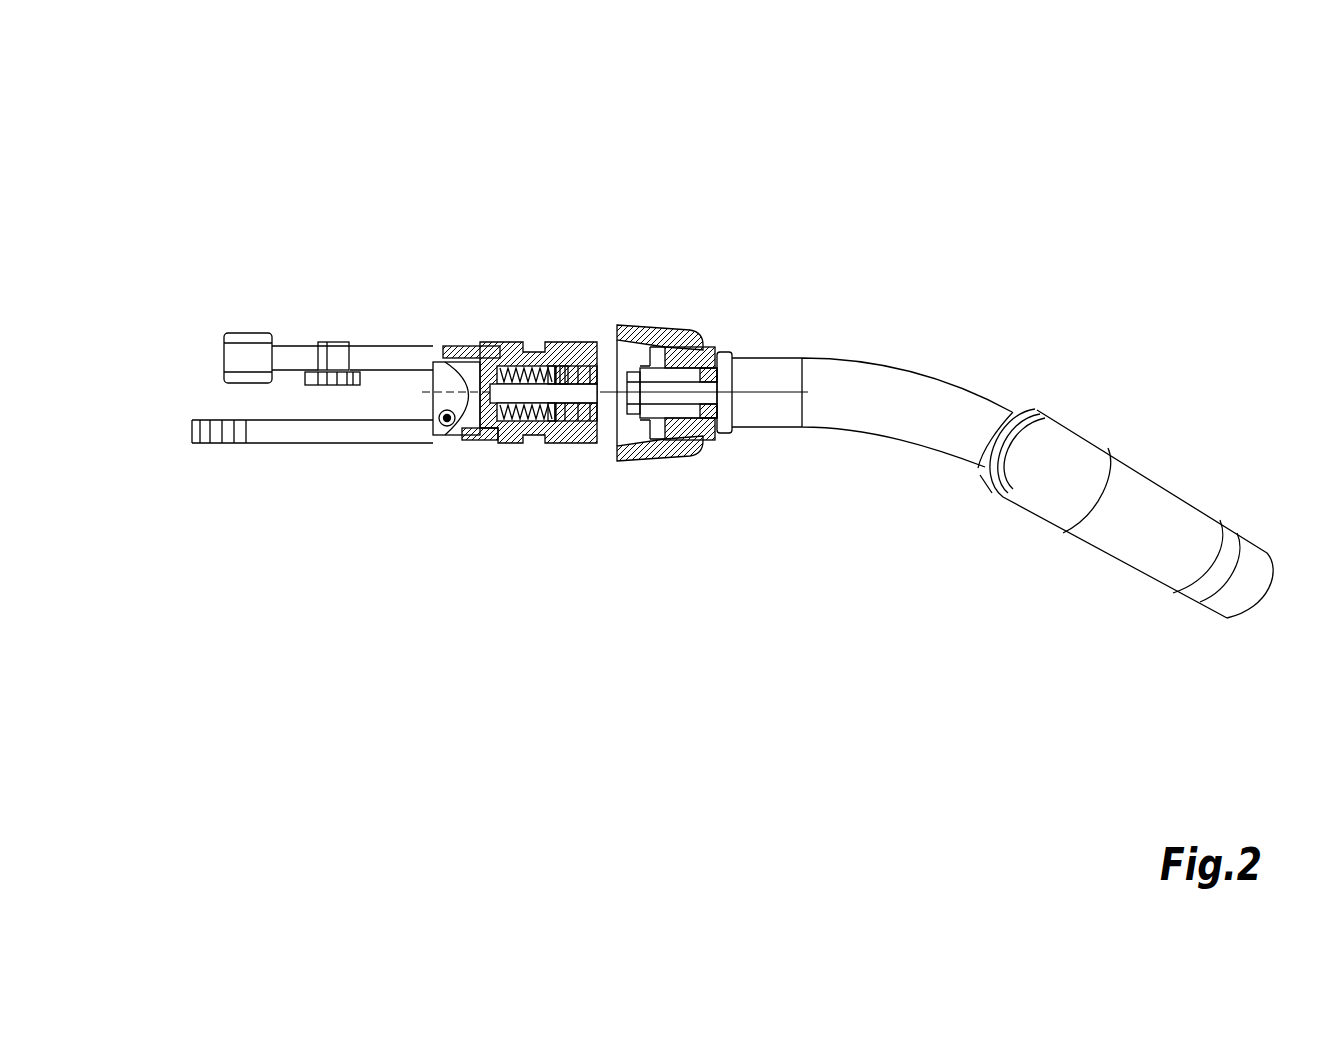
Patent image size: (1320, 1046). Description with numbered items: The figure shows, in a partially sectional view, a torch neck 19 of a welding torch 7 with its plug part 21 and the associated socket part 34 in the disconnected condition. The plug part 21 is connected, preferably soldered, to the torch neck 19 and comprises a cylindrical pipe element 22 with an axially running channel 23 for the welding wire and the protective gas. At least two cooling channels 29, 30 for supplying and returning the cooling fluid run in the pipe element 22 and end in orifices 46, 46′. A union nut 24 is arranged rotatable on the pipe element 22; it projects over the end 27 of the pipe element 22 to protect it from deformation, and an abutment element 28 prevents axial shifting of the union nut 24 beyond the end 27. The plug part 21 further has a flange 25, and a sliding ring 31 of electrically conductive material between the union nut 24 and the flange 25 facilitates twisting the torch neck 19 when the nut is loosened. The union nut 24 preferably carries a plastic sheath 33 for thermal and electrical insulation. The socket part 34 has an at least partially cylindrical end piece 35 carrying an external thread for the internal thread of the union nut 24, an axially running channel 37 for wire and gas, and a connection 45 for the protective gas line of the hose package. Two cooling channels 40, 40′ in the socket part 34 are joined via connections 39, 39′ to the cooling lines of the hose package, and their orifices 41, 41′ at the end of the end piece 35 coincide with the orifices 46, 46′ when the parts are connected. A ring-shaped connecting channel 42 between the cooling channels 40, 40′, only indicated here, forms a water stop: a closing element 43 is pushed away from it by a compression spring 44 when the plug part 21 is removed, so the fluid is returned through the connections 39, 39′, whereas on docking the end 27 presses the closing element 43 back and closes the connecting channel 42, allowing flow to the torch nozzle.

The welding torch 7 is at (1080, 267).
The torch neck 19 is at (910, 400).
The plug part 21 is at (735, 397).
The cylindrical pipe element 22 is at (645, 432).
The axially running channel 23 is at (705, 387).
The union nut 24 is at (695, 347).
The flange 25 is at (677, 340).
The end of the pipe element 27 is at (632, 412).
The abutment element 28 is at (707, 437).
The cooling channel 29 is at (728, 350).
The cooling channel 30 is at (710, 443).
The sliding ring 31 is at (690, 335).
The plastic sheath 33 is at (622, 343).
The socket part 34 is at (502, 370).
The cylindrical end piece 35 is at (588, 443).
The axially running channel 37 is at (450, 433).
The connection 39 is at (252, 355).
The connection 39′ is at (275, 432).
The cooling channel 40 is at (472, 352).
The cooling channel 40′ is at (483, 432).
The orifice 41 is at (552, 350).
The orifice 41′ is at (545, 440).
The connecting channel 42 is at (565, 350).
The closing element 43 is at (582, 350).
The compression spring 44 is at (475, 443).
The connection 45 is at (403, 378).
The orifice 46 is at (652, 332).
The orifice 46′ is at (675, 450).